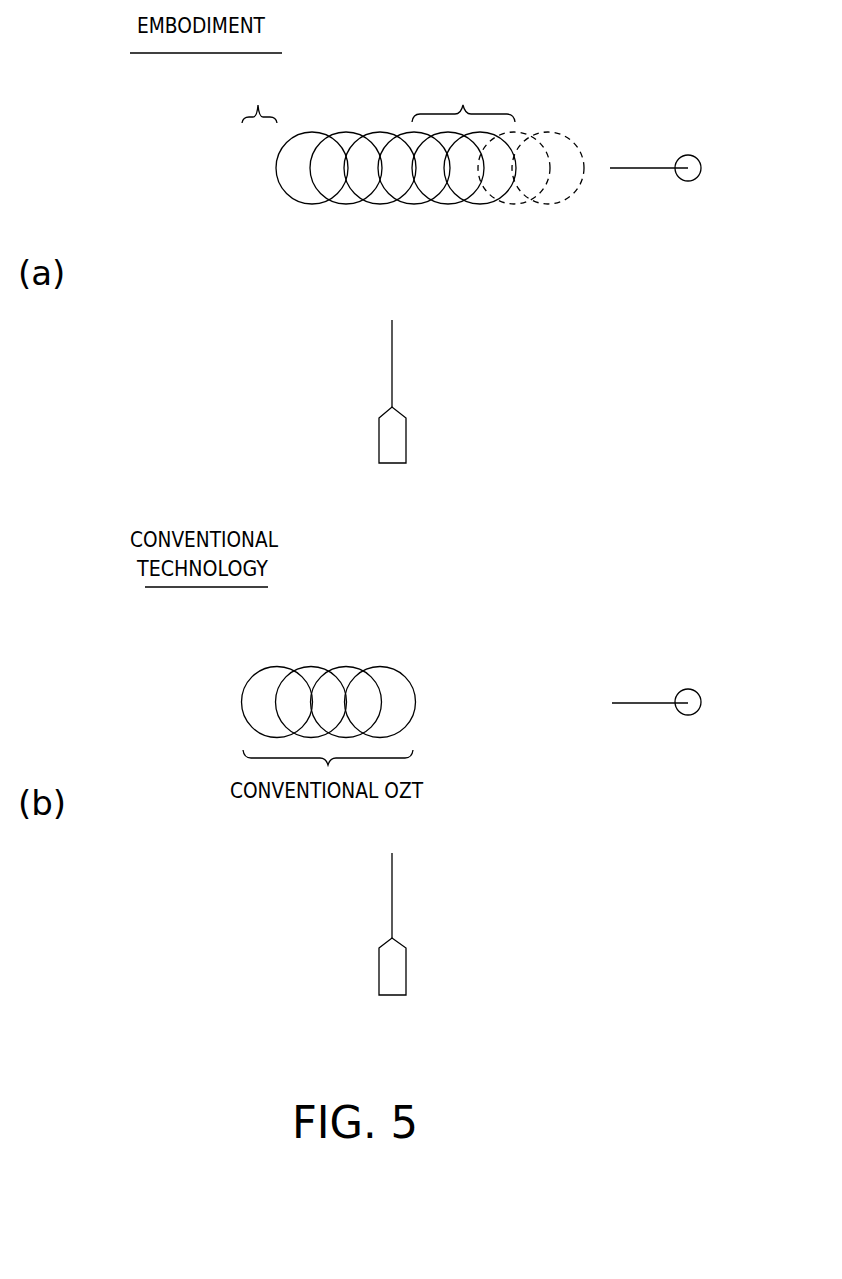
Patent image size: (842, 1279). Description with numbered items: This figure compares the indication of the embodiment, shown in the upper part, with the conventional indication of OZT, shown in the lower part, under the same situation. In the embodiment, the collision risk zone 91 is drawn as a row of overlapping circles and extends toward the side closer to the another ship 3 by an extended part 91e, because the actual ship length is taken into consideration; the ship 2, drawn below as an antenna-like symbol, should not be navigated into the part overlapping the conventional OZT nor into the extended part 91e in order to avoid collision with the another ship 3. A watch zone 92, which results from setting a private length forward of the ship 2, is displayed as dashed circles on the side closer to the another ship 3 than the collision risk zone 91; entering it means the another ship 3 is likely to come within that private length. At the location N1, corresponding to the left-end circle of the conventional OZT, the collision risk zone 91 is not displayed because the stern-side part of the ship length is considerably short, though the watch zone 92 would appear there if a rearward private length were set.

The ship 2 is at (400, 450).
The another ship 3 is at (688, 181).
The collision risk zone 91 is at (516, 211).
The extended part 91e is at (463, 93).
The watch zone 92 is at (584, 211).
The location N1 is at (260, 94).